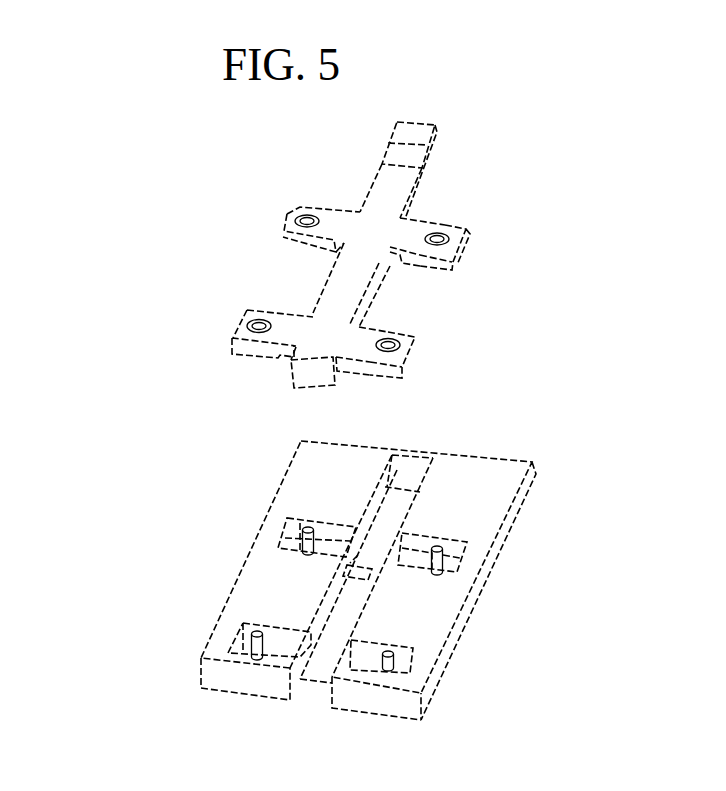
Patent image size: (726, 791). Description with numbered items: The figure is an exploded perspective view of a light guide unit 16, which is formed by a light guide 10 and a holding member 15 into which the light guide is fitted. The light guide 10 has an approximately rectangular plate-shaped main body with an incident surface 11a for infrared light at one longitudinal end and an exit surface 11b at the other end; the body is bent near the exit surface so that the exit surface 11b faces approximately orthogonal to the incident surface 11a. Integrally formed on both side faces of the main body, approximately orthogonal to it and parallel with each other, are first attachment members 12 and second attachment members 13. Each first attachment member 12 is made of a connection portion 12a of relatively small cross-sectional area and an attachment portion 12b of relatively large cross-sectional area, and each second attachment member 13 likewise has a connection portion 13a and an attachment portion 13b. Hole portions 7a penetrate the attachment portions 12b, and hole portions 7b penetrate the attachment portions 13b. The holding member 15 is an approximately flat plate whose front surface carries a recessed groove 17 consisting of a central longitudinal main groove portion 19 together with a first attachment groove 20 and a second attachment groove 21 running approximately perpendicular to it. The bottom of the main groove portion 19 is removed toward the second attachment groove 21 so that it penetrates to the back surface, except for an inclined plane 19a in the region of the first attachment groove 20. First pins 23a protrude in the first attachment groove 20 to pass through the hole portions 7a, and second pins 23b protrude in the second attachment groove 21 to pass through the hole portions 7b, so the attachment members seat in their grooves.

The light guide 10 is at (195, 201).
The light guide unit 16 is at (102, 391).
The hole portion 7a is at (305, 218).
The hole portion 7b is at (257, 325).
The incident surface 11a is at (297, 377).
The exit surface 11b is at (412, 125).
The first attachment member 12 is at (336, 210).
The connection portion 12a is at (426, 218).
The attachment portion 12b is at (455, 228).
The second attachment member 13 is at (285, 307).
The connection portion 13a is at (367, 327).
The attachment portion 13b is at (405, 336).
The holding member 15 is at (502, 463).
The recessed groove 17 is at (418, 500).
The main groove portion 19 is at (419, 462).
The inclined plane 19a is at (376, 577).
The first attachment groove 20 is at (457, 565).
The second attachment groove 21 is at (410, 670).
The first pin 23a is at (302, 529).
The second pin 23b is at (252, 640).